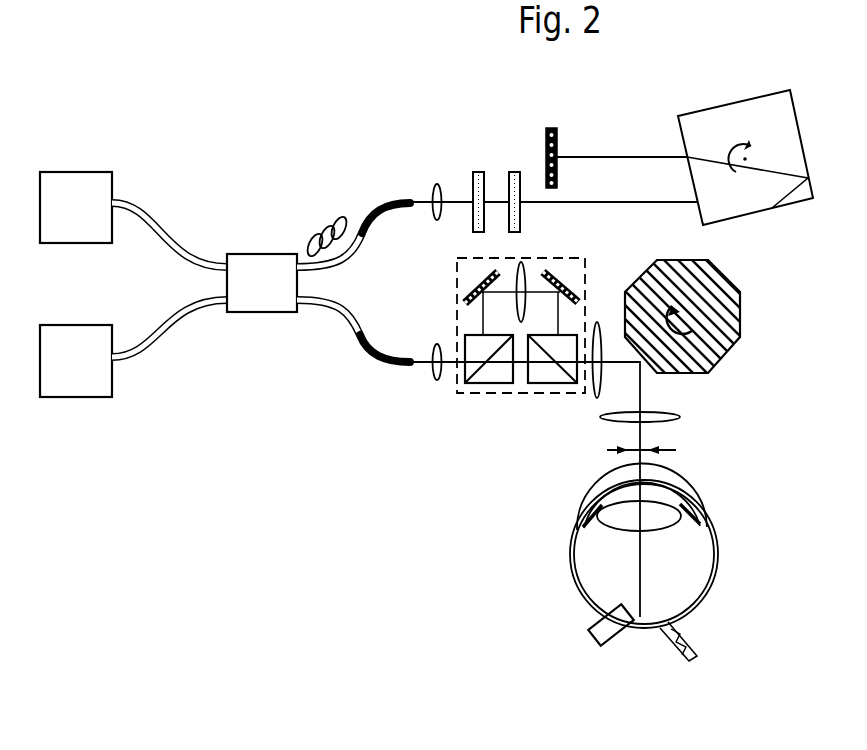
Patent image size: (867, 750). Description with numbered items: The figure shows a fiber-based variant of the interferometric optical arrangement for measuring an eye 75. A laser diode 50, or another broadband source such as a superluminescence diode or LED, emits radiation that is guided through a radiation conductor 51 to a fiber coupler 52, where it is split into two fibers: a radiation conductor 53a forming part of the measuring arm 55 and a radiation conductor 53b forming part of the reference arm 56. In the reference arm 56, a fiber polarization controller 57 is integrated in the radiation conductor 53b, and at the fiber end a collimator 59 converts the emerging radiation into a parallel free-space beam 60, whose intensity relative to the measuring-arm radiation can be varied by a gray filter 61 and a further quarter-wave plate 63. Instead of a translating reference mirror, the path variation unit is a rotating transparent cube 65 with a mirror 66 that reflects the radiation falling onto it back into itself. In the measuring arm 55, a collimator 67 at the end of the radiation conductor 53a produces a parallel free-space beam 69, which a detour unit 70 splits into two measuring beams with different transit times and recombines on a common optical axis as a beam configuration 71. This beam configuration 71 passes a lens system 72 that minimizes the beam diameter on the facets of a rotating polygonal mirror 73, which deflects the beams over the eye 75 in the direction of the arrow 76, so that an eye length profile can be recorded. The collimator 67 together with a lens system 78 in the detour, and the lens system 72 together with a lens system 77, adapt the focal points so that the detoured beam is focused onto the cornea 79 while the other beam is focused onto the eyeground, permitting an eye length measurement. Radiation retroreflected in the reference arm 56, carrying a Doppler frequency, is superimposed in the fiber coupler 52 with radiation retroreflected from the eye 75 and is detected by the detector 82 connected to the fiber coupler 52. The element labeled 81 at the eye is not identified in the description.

The laser diode 50 is at (92, 220).
The detector 82 is at (92, 374).
The radiation conductor 51 is at (151, 214).
The fiber coupler 52 is at (263, 313).
The radiation conductor 53a is at (342, 298).
The radiation conductor 53b is at (371, 232).
The fiber polarization controller 57 is at (320, 229).
The collimator 59 is at (434, 220).
The gray filter 61 is at (476, 233).
The λ/4 plate 63 is at (511, 172).
The reference arm 56 is at (494, 130).
The mirror 66 is at (558, 144).
The free-space beam 60 is at (592, 202).
The rotating transparent cube 65 is at (771, 132).
The detour unit 70 is at (577, 258).
The lens system 78 is at (520, 262).
The collimator 67 is at (436, 355).
The free-space beam 69 is at (441, 378).
The measuring arm 55 is at (518, 440).
The lens system 72 is at (594, 398).
The beam configuration 71 is at (640, 392).
The rotating polygonal mirror 73 is at (727, 350).
The lens system 77 is at (660, 416).
The arrow 76 is at (652, 449).
The cornea 79 is at (638, 466).
The eye 75 is at (692, 552).
The fixation target 81 is at (641, 617).